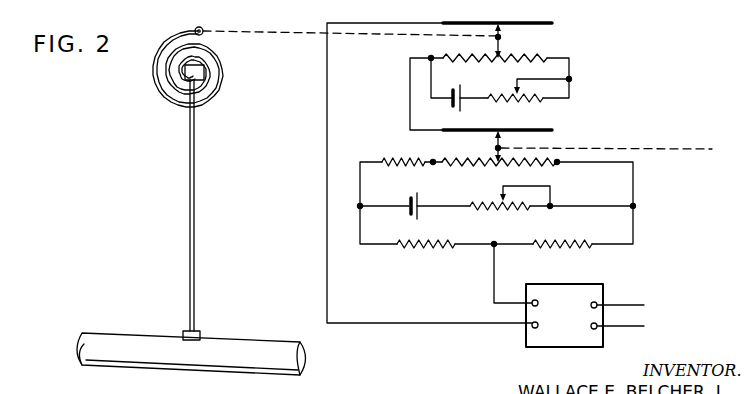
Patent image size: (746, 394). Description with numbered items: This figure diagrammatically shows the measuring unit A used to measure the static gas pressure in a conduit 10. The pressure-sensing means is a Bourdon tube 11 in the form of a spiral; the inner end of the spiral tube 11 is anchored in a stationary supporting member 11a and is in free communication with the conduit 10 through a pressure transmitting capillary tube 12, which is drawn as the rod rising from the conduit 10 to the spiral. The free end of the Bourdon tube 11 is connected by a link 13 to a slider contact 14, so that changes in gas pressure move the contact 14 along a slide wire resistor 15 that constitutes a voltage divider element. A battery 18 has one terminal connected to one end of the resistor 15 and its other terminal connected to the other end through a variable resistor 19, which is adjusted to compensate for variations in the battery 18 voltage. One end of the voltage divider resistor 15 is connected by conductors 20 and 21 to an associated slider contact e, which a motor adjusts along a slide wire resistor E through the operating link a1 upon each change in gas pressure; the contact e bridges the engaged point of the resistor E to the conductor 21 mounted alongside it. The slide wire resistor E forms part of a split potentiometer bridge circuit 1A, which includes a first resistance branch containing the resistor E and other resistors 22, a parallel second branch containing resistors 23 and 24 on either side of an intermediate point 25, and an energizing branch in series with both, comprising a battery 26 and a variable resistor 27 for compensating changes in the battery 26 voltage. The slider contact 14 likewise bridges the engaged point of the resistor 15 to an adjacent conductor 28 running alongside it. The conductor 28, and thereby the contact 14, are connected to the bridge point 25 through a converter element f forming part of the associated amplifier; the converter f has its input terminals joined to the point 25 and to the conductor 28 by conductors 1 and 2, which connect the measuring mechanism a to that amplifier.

The conductor 1 is at (493, 278).
The split potentiometer bridge circuit 1A is at (657, 216).
The conductor 2 is at (327, 153).
The conduit 10 is at (132, 345).
The Bourdon tube 11 is at (157, 73).
The stationary supporting member 11a is at (205, 73).
The pressure transmitting capillary tube 12 is at (190, 207).
The link 13 is at (265, 31).
The slider contact 14 is at (501, 38).
The slide wire resistor 15 is at (499, 76).
The battery 18 is at (458, 80).
The variable resistor 19 is at (513, 101).
The conductor 20 is at (403, 94).
The conductor 21 is at (498, 128).
The resistors 22 is at (409, 156).
The resistor 23 is at (437, 247).
The resistor 24 is at (560, 250).
The intermediate point 25 is at (495, 240).
The battery 26 is at (416, 192).
The variable resistor 27 is at (507, 208).
The conductor 28 is at (508, 24).
The measuring unit A is at (656, 71).
The measuring mechanism a is at (130, 177).
The operating link a1 is at (640, 148).
The slider contact e is at (490, 142).
The slide wire resistor E is at (478, 175).
The converter element f is at (572, 324).